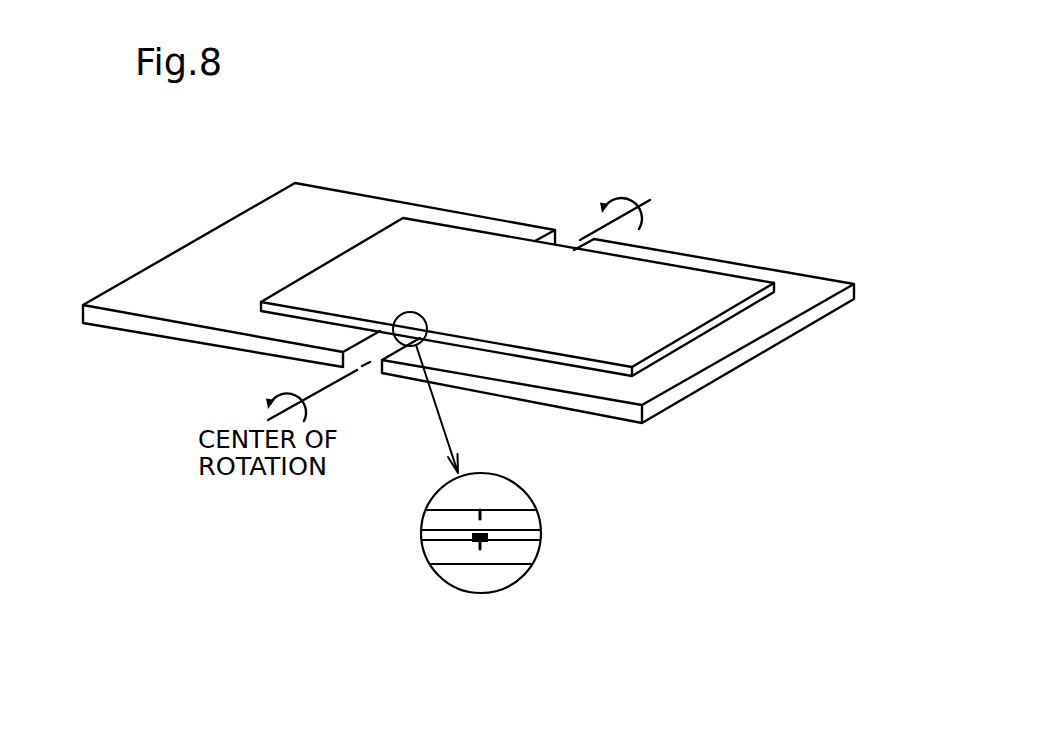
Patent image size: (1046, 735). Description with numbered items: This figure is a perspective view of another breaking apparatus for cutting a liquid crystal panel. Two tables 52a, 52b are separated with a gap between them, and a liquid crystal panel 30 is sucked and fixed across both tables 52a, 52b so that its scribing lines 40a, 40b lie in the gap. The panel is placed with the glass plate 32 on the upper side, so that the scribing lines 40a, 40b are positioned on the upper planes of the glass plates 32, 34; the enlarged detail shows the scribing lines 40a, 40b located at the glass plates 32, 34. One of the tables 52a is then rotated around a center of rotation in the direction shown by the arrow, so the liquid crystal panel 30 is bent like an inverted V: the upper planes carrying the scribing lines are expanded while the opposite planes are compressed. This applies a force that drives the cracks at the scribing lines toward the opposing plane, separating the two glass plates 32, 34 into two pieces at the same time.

The table 52a is at (195, 242).
The table 52b is at (795, 335).
The liquid crystal panel 30 is at (693, 326).
The glass plate 32 is at (689, 280).
The glass plate 34 is at (413, 558).
The scribing line 40a is at (480, 518).
The scribing line 40b is at (487, 547).